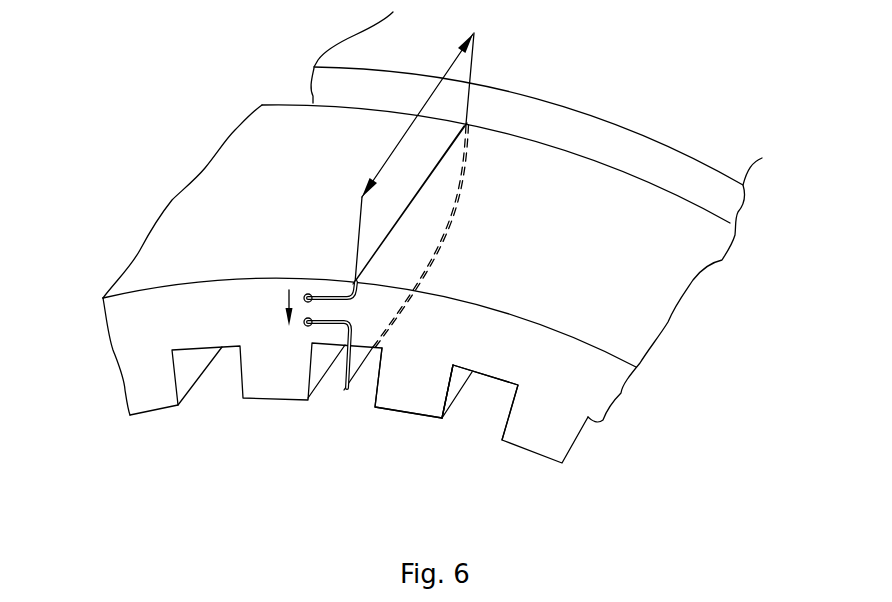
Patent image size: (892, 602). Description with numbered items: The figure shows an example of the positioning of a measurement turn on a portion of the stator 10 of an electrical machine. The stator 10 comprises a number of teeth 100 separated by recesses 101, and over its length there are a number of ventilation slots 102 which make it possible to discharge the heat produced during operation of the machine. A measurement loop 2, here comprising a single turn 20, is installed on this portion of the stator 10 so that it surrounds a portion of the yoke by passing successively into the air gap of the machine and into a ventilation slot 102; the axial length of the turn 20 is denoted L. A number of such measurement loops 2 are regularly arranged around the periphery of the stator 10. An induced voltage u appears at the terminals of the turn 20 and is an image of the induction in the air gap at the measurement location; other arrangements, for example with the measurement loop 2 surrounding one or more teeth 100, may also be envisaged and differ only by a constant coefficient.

The stator 10 is at (558, 358).
The ventilation slots 102 is at (613, 150).
The teeth 100 is at (402, 392).
The recesses 101 is at (473, 403).
The turn 20 is at (382, 247).
The measurement loop 2 is at (350, 287).